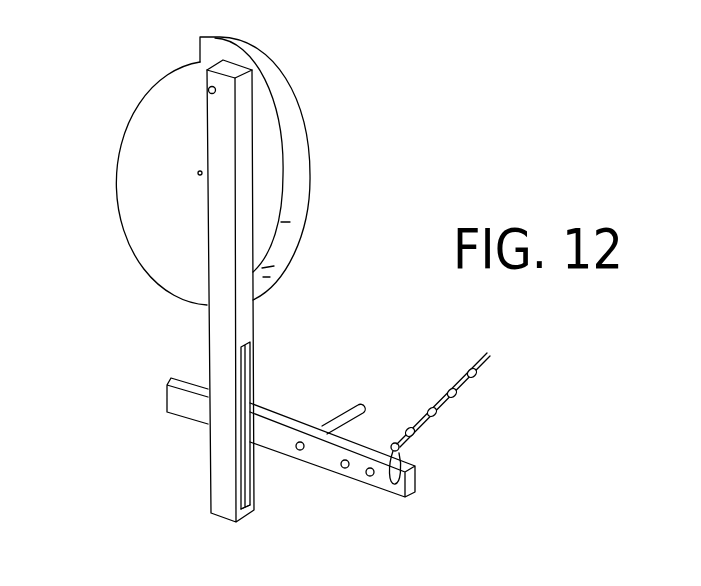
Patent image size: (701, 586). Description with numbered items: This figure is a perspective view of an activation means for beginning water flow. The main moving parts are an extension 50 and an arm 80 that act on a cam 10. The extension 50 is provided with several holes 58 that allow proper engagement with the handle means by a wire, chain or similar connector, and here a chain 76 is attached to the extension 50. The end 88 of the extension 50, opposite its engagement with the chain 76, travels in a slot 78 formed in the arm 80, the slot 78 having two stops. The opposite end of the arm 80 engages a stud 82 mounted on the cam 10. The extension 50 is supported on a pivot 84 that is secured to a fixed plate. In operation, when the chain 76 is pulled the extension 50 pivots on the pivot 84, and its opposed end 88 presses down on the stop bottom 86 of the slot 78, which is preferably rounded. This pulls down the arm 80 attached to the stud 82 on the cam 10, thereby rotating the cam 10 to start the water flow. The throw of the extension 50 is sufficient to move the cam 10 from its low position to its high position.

The cam 10 is at (140, 143).
The stud 82 is at (215, 90).
The arm 80 is at (218, 480).
The slot 78 is at (247, 475).
The stop bottom 86 is at (242, 497).
The end 88 is at (180, 403).
The extension 50 is at (327, 448).
The pivot 84 is at (304, 442).
The holes 58 is at (368, 477).
The chain 76 is at (448, 398).